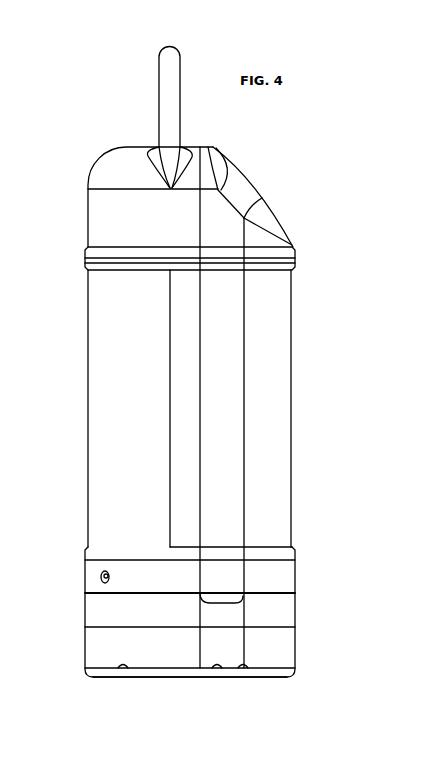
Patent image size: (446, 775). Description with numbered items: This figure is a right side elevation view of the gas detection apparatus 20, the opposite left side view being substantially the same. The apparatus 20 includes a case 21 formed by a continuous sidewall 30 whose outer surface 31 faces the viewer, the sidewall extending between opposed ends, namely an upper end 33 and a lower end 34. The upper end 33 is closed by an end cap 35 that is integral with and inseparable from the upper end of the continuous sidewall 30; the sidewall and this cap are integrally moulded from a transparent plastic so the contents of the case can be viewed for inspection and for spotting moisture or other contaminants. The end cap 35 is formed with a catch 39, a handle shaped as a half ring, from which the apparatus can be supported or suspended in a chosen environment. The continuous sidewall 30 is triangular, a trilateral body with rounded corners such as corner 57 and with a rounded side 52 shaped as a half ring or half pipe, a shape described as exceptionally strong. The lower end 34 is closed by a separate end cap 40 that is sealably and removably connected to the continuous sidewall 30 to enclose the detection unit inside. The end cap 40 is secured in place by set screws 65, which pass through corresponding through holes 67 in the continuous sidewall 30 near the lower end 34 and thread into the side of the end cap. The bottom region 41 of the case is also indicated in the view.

The apparatus 20 is at (303, 188).
The case 21 is at (88, 405).
The continuous sidewall 30 is at (291, 457).
The outer surface 31 is at (275, 323).
The upper end 33 is at (293, 258).
The lower end 34 is at (297, 572).
The end cap 35 is at (100, 218).
The catch 39 is at (172, 77).
The end cap 40 is at (83, 617).
The bottom 41 is at (185, 678).
The side 52 is at (113, 330).
The corner 57 is at (291, 380).
The set screw 65 is at (100, 580).
The through hole 67 is at (102, 573).